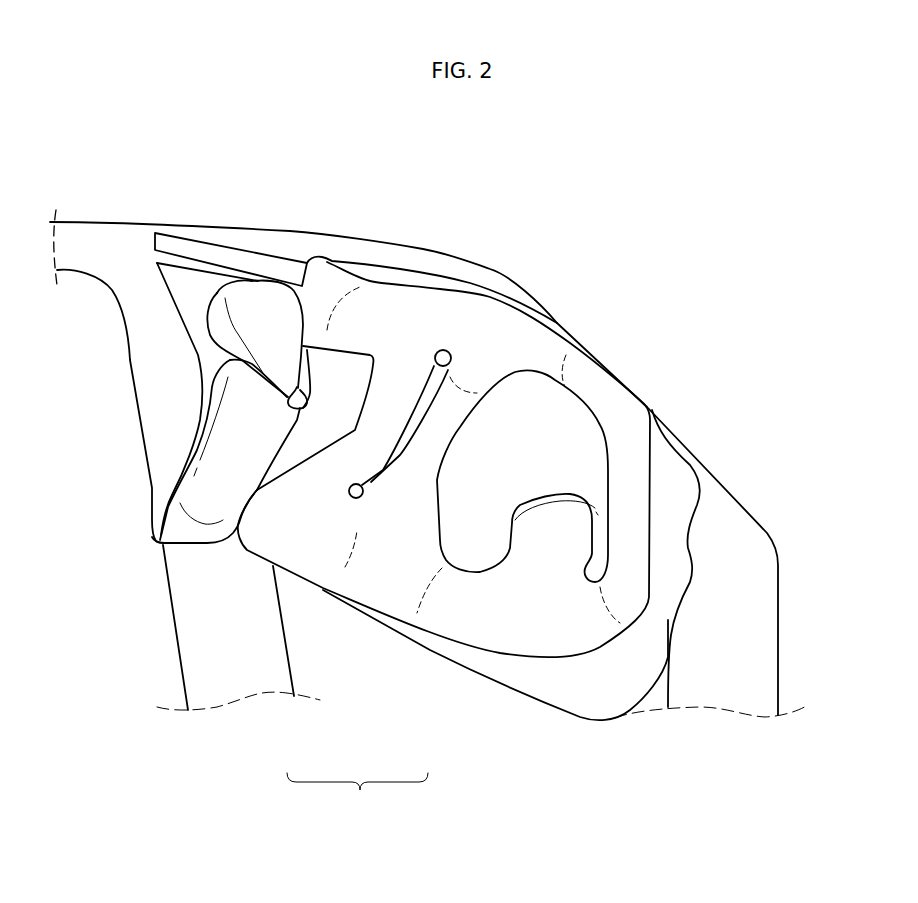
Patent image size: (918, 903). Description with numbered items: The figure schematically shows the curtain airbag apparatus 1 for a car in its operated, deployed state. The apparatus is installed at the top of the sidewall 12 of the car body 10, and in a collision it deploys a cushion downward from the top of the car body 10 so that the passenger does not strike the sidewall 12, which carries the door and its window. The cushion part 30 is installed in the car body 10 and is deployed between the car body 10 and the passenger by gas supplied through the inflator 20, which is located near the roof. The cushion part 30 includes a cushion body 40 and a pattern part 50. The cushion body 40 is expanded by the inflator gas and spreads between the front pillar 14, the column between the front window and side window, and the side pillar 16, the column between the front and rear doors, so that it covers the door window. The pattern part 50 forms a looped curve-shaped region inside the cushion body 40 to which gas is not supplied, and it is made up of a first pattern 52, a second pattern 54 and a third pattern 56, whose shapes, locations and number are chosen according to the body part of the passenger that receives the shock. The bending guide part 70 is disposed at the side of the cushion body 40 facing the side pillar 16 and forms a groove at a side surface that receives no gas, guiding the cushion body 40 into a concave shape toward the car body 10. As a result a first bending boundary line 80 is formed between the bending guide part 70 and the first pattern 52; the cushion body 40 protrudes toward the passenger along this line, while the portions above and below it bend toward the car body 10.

The curtain airbag apparatus 1 is at (569, 770).
The car body 10 is at (85, 208).
The sidewall 12 is at (423, 249).
The front pillar 14 is at (727, 500).
The side pillar 16 is at (145, 380).
The inflator 20 is at (196, 243).
The cushion part 30 is at (466, 668).
The cushion body 40 is at (530, 343).
The pattern part 50 is at (357, 794).
The first pattern 52 is at (300, 410).
The second pattern 54 is at (360, 497).
The third pattern 56 is at (472, 538).
The bending guide part 70 is at (235, 350).
The first bending boundary line 80 is at (272, 385).